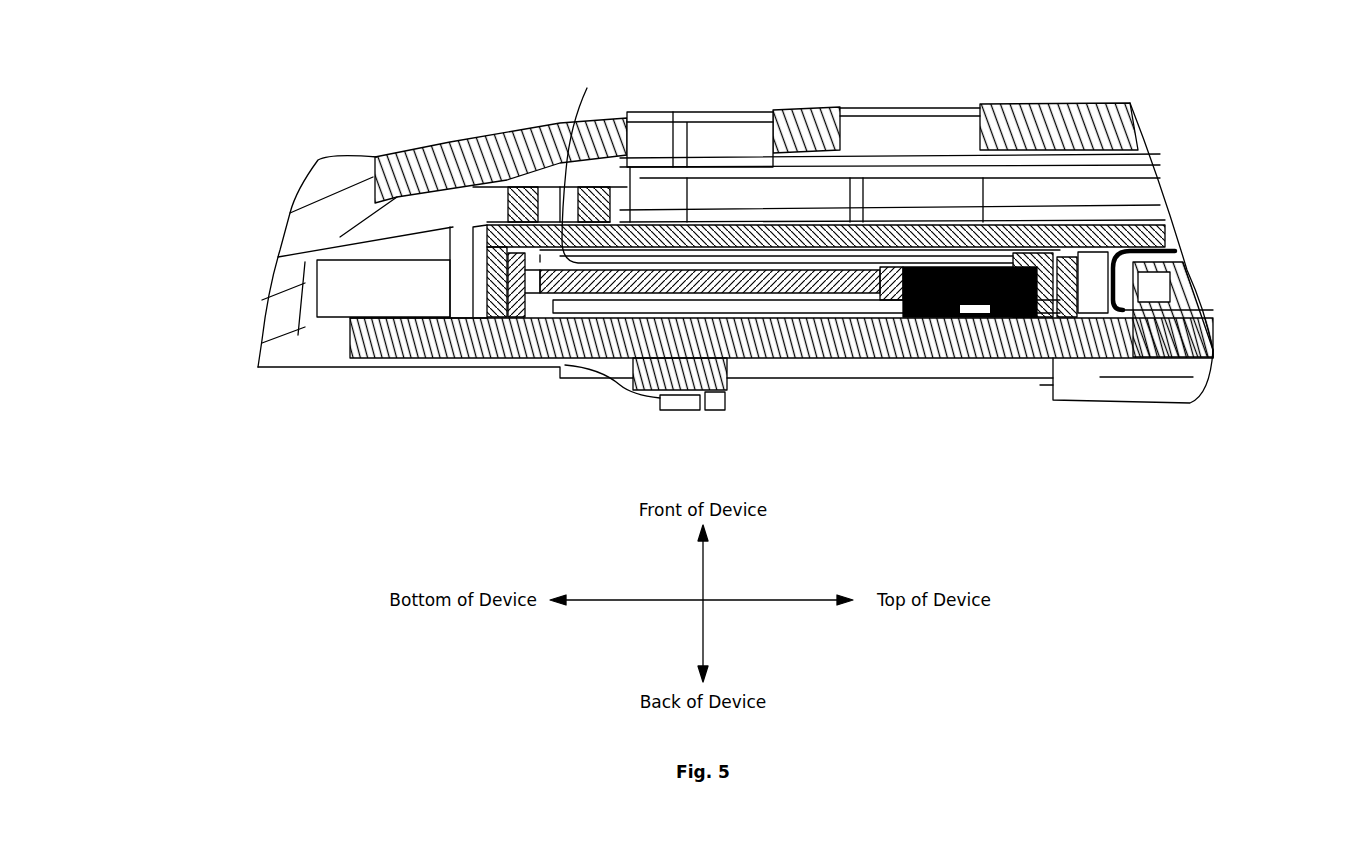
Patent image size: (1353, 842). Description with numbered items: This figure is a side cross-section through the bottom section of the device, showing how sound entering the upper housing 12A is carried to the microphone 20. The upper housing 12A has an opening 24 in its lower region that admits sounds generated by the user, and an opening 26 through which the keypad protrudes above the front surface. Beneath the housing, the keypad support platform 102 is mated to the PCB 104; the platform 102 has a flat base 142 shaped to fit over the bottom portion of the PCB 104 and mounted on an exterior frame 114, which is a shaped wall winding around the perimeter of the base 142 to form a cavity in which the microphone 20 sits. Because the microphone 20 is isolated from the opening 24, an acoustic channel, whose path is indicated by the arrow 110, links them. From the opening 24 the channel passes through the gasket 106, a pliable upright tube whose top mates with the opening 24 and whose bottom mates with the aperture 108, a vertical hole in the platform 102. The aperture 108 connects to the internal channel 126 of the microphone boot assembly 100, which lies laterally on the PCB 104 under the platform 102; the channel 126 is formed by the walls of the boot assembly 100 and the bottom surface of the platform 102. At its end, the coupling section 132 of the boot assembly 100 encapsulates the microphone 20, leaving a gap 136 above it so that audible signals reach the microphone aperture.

The upper housing 12A is at (306, 203).
The microphone 20 is at (1000, 250).
The opening 24 is at (800, 190).
The opening 26 is at (760, 110).
The microphone boot assembly 100 is at (517, 318).
The keypad support platform 102 is at (480, 260).
The PCB 104 is at (350, 347).
The gasket 106 is at (513, 182).
The aperture 108 is at (592, 187).
The arrow 110 is at (568, 62).
The exterior frame 114 is at (1087, 310).
The internal channel 126 is at (943, 110).
The microphone coupling section 132 is at (1045, 388).
The gap 136 is at (990, 255).
The flat base 142 is at (853, 235).